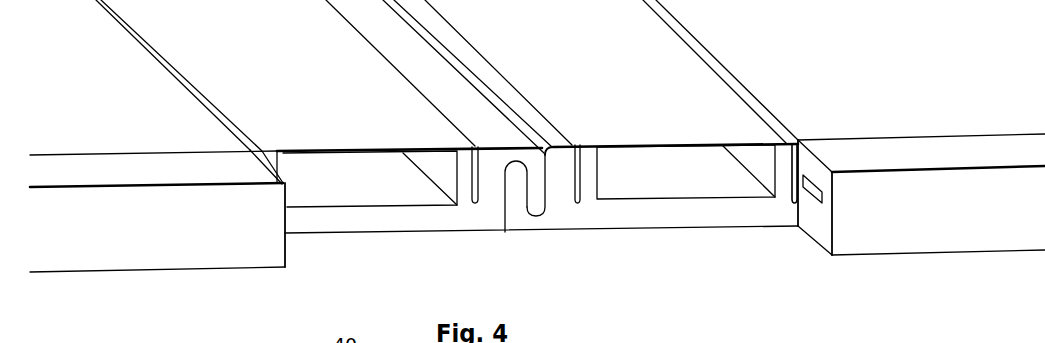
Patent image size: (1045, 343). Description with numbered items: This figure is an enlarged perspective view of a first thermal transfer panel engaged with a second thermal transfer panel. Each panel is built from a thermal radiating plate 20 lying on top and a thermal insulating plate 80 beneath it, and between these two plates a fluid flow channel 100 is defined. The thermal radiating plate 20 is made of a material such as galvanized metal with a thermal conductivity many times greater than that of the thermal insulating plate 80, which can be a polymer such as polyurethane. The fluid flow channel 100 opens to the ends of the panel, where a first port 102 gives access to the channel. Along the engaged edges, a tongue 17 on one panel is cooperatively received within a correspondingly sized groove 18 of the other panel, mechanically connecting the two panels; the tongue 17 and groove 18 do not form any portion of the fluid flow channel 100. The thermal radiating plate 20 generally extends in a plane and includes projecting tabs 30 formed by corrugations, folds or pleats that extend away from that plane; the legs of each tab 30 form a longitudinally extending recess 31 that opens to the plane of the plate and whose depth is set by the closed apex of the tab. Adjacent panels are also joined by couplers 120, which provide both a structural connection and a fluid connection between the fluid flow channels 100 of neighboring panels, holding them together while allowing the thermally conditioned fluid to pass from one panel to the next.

The thermal radiating plate 20 is at (246, 23).
The recess 31 is at (250, 148).
The coupler 120 is at (125, 248).
The thermal insulating plate 80 is at (348, 222).
The first port 102 is at (402, 189).
The tongue 17 is at (535, 190).
The groove 18 is at (549, 196).
The projecting tab 30 is at (580, 190).
The fluid flow channel 100 is at (656, 181).